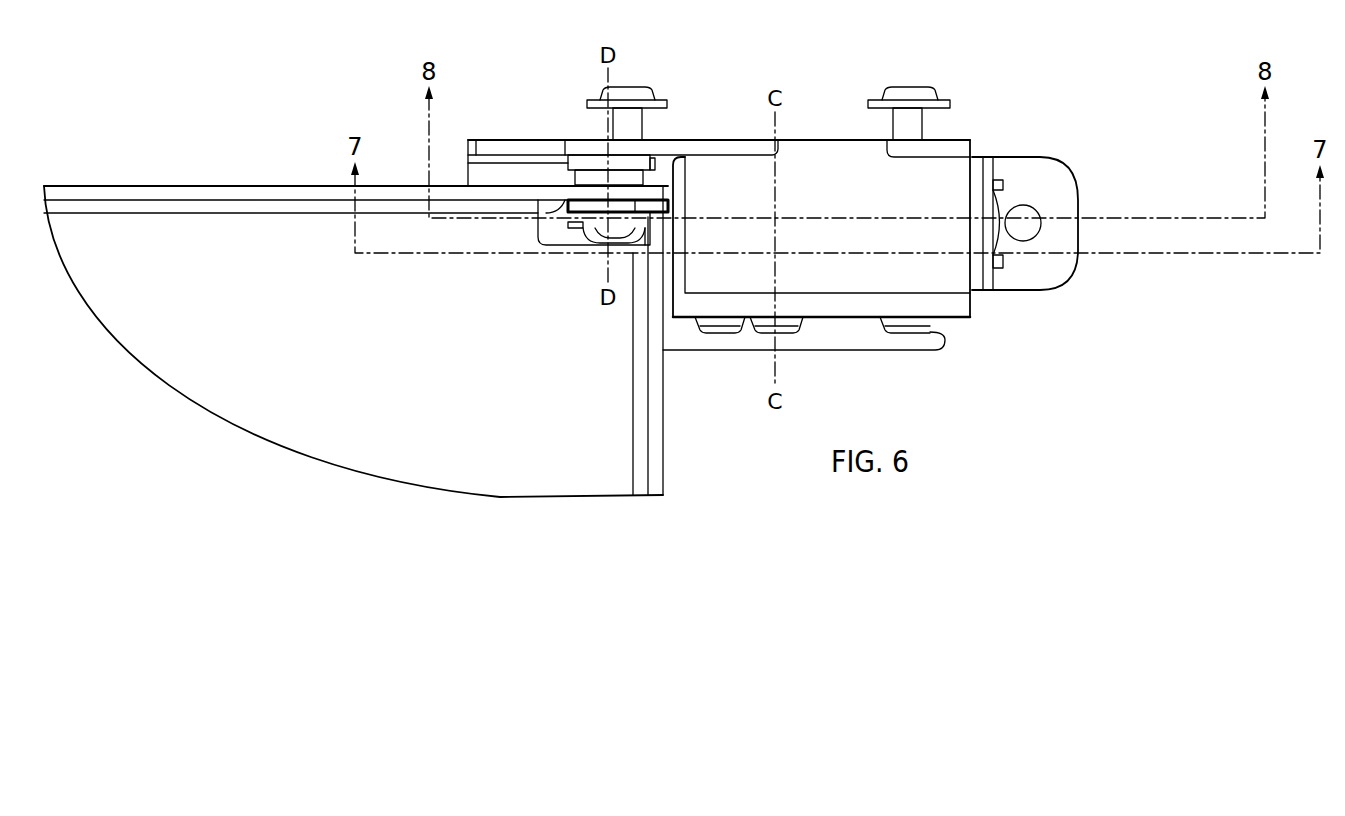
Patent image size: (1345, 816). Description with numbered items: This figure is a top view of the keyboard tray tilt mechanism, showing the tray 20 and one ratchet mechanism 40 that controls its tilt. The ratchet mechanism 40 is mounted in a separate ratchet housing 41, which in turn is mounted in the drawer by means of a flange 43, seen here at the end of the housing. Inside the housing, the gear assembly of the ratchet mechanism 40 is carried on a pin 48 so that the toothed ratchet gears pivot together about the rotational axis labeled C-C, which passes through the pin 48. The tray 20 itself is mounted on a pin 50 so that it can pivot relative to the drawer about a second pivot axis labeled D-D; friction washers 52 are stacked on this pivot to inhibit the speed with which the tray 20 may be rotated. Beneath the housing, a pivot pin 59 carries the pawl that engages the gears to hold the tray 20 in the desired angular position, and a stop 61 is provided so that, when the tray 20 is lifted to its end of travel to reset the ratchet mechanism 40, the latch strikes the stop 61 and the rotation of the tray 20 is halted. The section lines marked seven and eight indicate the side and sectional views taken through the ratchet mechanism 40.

The tray 20 is at (184, 188).
The ratchet mechanism 40 is at (899, 231).
The ratchet housing 41 is at (957, 175).
The flange 43 is at (1070, 190).
The pin 48 is at (790, 335).
The pin 50 is at (583, 233).
The friction washers 52 is at (664, 140).
The pivot pin 59 is at (920, 350).
The stop 61 is at (721, 335).